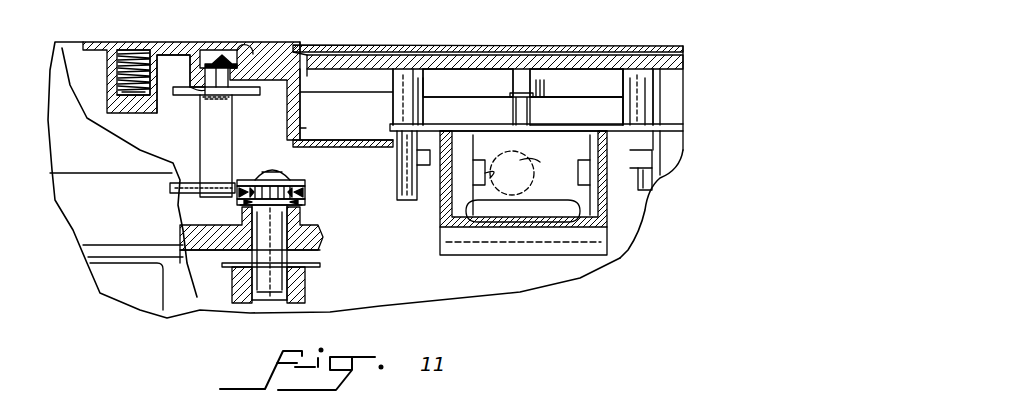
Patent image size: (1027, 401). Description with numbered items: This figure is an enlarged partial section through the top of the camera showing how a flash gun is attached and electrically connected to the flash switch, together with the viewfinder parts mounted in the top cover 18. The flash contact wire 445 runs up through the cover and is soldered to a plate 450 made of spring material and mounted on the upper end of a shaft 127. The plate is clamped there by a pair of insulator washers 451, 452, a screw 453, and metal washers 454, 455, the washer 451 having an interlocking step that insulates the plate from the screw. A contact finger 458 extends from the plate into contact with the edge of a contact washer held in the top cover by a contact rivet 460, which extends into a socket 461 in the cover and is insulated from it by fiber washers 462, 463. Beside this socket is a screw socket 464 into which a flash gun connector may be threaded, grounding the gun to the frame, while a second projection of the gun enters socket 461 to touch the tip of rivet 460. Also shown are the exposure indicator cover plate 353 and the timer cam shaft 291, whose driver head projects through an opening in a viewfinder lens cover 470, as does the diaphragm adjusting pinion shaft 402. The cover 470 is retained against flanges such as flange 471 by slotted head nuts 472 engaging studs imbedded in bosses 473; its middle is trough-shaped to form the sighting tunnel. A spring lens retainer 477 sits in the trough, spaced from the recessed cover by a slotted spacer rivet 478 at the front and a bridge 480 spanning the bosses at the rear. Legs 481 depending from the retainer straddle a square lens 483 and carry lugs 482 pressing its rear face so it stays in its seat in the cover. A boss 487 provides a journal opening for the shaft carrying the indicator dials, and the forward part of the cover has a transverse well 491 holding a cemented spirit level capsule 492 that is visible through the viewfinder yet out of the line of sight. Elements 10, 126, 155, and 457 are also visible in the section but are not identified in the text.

The base 10 is at (306, 300).
The top cover 18 is at (440, 62).
The plate 126 is at (322, 245).
The shaft 127 is at (262, 305).
The thin plate 155 is at (224, 266).
The timer cam shaft 291 is at (408, 202).
The exposure indicator cover plate 353 is at (386, 45).
The diaphragm adjusting pinion shaft 402 is at (664, 178).
The flash contact wire 445 is at (170, 184).
The plate 450 is at (306, 196).
The insulator washer 451 is at (304, 191).
The insulator washer 452 is at (304, 203).
The screw 453 is at (268, 176).
The metal washer 454 is at (298, 180).
The metal washer 455 is at (321, 220).
The sleeve 457 is at (226, 155).
The contact finger 458 is at (254, 97).
The contact rivet 460 is at (228, 54).
The socket 461 is at (252, 48).
The fiber washer 462 is at (198, 88).
The fiber washer 463 is at (214, 60).
The screw socket 464 is at (128, 48).
The viewfinder lens cover 470 is at (360, 138).
The flange 471 is at (302, 132).
The slotted head nut 472 is at (395, 150).
The boss 473 is at (418, 98).
The spring lens retainer 477 is at (514, 122).
The slotted spacer rivet 478 is at (532, 116).
The bridge 480 is at (468, 83).
The leg 481 is at (445, 224).
The lug 482 is at (512, 173).
The square lens 483 is at (524, 161).
The boss 487 is at (548, 88).
The transverse well 491 is at (492, 250).
The spirit level capsule 492 is at (528, 217).